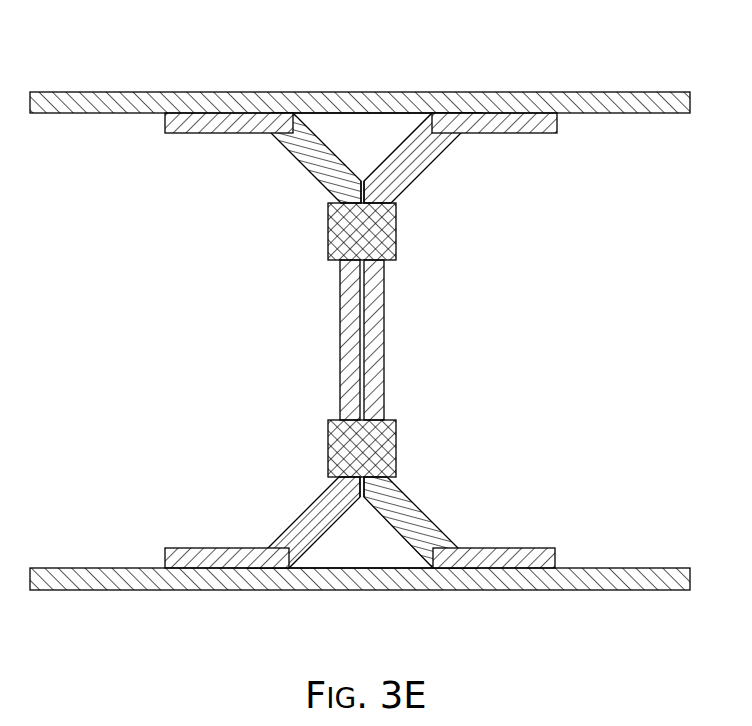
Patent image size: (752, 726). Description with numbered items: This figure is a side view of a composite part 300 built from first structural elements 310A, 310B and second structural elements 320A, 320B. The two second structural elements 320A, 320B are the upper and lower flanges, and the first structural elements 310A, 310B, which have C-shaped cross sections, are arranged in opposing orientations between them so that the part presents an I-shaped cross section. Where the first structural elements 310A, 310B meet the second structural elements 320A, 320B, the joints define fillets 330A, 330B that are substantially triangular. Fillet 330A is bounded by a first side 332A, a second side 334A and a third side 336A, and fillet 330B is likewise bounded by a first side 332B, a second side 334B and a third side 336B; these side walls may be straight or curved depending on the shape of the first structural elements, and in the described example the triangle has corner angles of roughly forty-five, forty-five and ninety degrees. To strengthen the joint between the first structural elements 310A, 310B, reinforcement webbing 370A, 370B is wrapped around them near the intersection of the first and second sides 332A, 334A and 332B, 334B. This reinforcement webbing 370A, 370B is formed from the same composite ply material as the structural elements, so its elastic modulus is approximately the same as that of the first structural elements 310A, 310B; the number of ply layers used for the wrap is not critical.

The composite part 300 is at (463, 46).
The first structural element 310A is at (214, 134).
The first structural element 310B is at (503, 134).
The second structural element 320A is at (547, 92).
The second structural element 320B is at (608, 568).
The fillet 330A is at (342, 133).
The fillet 330B is at (342, 550).
The first side 332A is at (318, 182).
The first side 332B is at (303, 547).
The second side 334A is at (397, 158).
The second side 334B is at (412, 513).
The third side 336A is at (404, 113).
The third side 336B is at (363, 568).
The reinforcement webbing 370A is at (398, 238).
The reinforcement webbing 370B is at (397, 447).